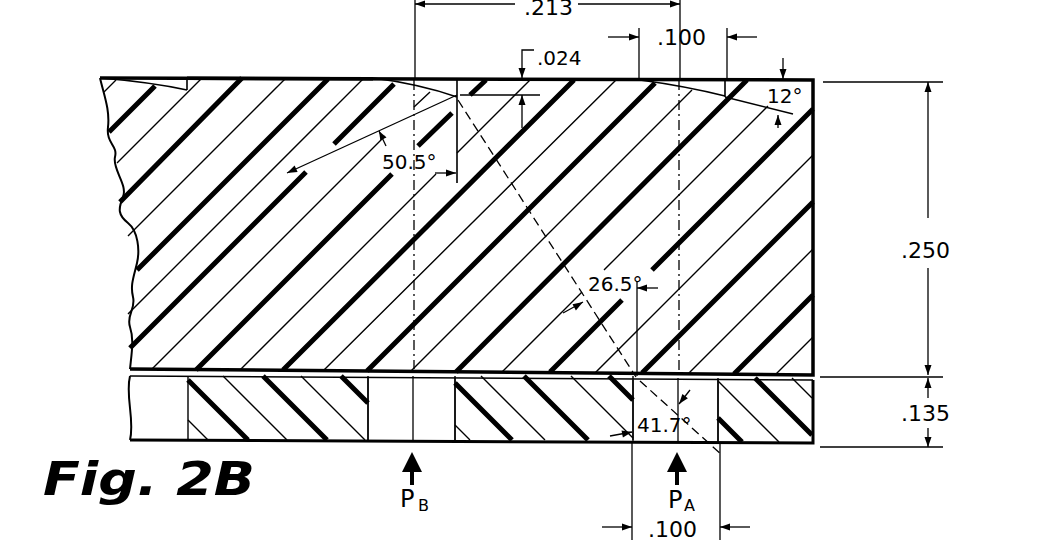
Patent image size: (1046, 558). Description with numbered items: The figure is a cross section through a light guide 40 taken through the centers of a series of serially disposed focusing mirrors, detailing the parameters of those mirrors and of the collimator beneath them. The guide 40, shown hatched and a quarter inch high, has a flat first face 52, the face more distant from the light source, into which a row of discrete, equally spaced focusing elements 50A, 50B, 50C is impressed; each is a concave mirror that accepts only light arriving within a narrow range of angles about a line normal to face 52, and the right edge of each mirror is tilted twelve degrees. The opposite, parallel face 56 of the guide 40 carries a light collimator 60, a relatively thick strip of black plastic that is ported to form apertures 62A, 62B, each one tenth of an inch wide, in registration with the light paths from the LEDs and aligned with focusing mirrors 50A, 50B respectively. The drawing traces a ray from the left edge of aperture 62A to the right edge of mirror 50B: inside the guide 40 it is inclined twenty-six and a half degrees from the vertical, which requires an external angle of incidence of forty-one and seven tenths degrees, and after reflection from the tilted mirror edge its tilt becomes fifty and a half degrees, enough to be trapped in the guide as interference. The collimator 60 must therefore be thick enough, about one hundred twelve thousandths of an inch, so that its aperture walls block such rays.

The light guide 40 is at (819, 172).
The first side or face of the guide 52 is at (287, 77).
The focusing element 50A is at (706, 86).
The focusing element 50B is at (407, 77).
The focusing element 50C is at (163, 84).
The face of the guide 56 is at (392, 377).
The light collimator 60 is at (588, 444).
The aperture 62A is at (706, 404).
The aperture 62B is at (425, 396).